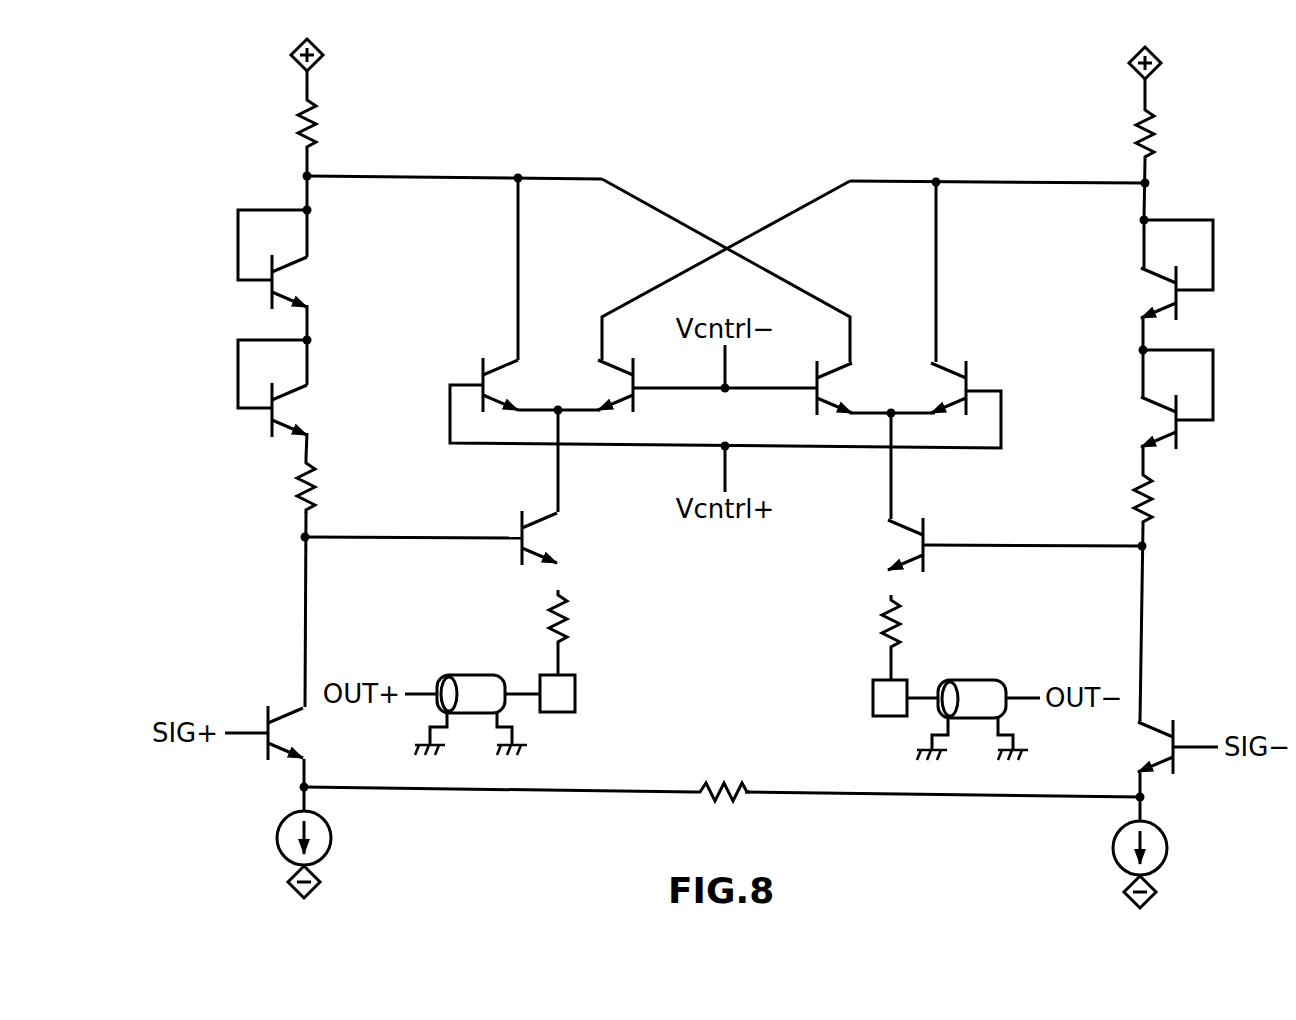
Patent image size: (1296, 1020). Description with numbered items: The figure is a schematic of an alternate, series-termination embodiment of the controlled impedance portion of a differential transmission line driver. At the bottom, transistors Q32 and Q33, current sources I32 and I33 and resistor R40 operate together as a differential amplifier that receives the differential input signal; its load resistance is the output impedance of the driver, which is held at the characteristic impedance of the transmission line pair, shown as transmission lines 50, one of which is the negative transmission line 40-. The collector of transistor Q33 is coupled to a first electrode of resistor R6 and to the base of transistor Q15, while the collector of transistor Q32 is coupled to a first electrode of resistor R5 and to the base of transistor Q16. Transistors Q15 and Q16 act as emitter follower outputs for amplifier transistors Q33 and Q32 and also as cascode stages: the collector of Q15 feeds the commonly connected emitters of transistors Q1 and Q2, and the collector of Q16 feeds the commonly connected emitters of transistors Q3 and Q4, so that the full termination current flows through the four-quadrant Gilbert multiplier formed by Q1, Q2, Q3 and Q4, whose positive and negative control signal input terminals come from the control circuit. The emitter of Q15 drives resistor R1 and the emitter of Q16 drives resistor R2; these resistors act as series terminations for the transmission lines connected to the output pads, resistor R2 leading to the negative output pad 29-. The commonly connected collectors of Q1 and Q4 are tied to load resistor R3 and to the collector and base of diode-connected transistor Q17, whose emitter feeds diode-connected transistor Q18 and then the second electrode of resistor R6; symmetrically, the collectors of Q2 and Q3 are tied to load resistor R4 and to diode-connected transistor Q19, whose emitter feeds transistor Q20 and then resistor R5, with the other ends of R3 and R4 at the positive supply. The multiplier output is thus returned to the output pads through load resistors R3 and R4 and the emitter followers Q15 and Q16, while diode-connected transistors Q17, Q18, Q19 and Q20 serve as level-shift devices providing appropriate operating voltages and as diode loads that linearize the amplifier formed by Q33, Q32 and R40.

The transistor Q1 is at (498, 370).
The transistor Q2 is at (619, 370).
The transistor Q3 is at (956, 372).
The transistor Q4 is at (831, 372).
The transistor Q15 is at (532, 524).
The transistor Q16 is at (918, 530).
The transistor Q17 is at (278, 259).
The transistor Q18 is at (278, 388).
The transistor Q19 is at (1172, 270).
The transistor Q20 is at (1172, 399).
The transistor Q32 is at (1167, 732).
The transistor Q33 is at (277, 719).
The resistor R1 is at (577, 615).
The resistor R2 is at (910, 619).
The resistor R3 is at (326, 121).
The resistor R4 is at (1164, 130).
The resistor R5 is at (1162, 494).
The resistor R6 is at (326, 483).
The resistor R40 is at (722, 794).
The current source I32 is at (1113, 864).
The current source I33 is at (276, 854).
The transmission line 50 is at (721, 717).
The transmission line 40- is at (975, 680).
The output pad 29- is at (889, 716).